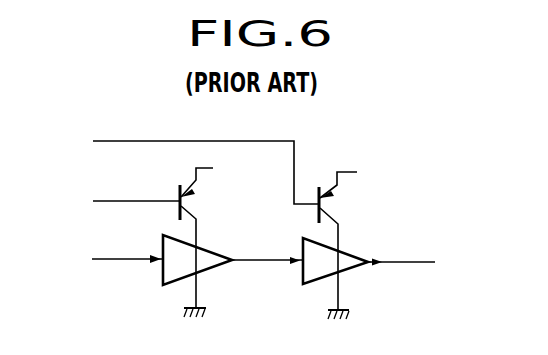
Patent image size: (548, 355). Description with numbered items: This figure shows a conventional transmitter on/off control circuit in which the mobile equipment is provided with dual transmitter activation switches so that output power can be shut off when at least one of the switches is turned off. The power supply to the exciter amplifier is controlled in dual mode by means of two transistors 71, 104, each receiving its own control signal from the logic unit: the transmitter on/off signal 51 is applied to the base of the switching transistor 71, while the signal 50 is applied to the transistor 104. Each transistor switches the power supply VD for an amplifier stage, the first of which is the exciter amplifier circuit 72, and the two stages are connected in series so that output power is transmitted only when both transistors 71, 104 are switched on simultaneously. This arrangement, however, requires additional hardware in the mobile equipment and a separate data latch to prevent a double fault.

The power reduction command 50 is at (206, 155).
The transmitter on/off signal 51 is at (136, 187).
The switching transistor 71 is at (190, 200).
The exciter amplifier circuit 72 is at (197, 262).
The transistor 104 is at (331, 203).